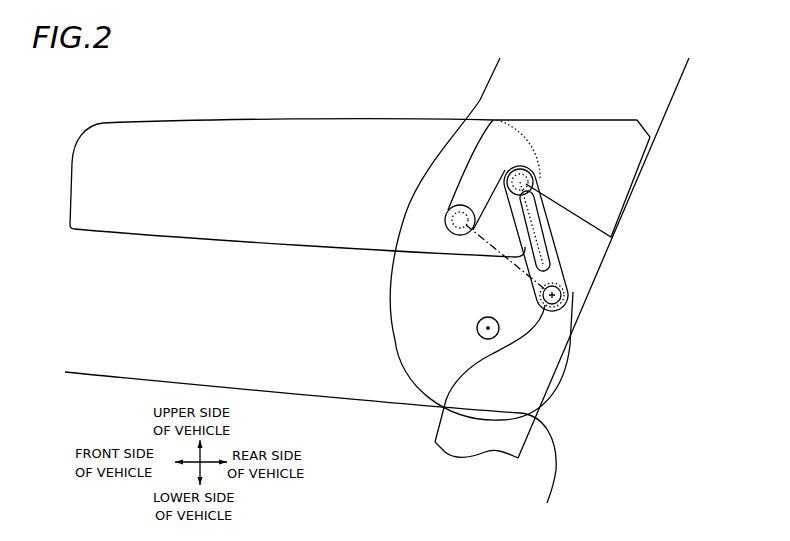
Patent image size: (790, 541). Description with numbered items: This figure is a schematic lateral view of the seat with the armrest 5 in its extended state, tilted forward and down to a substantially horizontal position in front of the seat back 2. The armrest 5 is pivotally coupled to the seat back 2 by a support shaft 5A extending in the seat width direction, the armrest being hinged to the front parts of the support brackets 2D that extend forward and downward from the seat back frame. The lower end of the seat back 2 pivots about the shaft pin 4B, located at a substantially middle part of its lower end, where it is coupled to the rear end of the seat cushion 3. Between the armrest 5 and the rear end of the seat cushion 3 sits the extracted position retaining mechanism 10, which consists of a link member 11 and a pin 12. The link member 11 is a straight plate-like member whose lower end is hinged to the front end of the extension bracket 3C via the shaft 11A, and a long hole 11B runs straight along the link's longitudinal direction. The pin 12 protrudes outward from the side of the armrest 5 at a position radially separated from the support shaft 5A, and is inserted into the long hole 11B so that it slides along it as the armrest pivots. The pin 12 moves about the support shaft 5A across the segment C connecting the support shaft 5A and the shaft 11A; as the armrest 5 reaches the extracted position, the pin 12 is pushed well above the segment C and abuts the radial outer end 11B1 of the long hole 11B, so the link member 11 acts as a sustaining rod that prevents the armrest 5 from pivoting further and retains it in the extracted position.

The armrest 5 is at (309, 117).
The support shaft 5A is at (445, 219).
The support bracket 2D is at (577, 127).
The extracted position retaining mechanism 10 is at (600, 250).
The seat back 2 is at (661, 100).
The extension bracket 3C is at (531, 375).
The seat cushion 3 is at (212, 386).
The link member 11 is at (562, 273).
The long hole 11B is at (532, 229).
The radial outer end of the long hole 11B1 is at (538, 162).
The pin 12 is at (522, 182).
The shaft 11A is at (562, 294).
The shaft pin 4B is at (477, 328).
The segment C is at (511, 266).